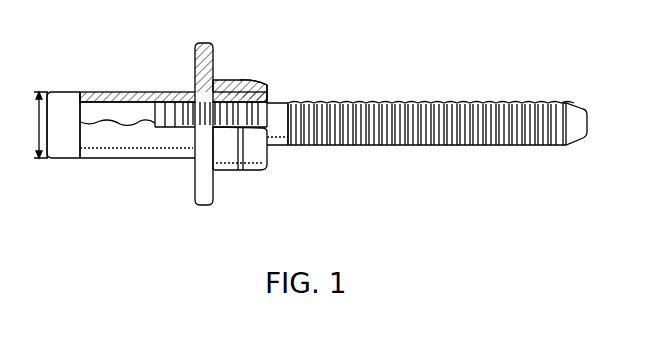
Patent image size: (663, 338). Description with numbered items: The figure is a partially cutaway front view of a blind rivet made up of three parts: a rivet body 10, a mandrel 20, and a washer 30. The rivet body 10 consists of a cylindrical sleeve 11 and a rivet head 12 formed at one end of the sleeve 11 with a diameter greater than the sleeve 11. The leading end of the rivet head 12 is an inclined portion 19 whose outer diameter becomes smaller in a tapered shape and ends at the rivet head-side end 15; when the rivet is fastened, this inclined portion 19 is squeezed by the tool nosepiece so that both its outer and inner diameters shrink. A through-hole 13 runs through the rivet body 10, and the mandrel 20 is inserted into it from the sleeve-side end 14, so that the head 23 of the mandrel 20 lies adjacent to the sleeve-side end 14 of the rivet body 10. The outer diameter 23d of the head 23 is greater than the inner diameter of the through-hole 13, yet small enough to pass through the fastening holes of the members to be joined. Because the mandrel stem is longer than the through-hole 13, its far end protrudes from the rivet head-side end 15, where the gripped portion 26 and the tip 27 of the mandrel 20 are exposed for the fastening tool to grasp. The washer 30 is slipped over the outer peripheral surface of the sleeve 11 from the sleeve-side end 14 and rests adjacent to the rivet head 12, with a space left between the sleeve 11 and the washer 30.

The rivet body 10 is at (165, 72).
The sleeve 11 is at (111, 92).
The rivet head 12 is at (229, 80).
The through-hole 13 is at (138, 103).
The sleeve-side end 14 is at (80, 92).
The rivet head-side end 15 is at (269, 92).
The inclined portion 19 is at (253, 80).
The mandrel 20 is at (402, 98).
The head 23 is at (72, 92).
The outer diameter of the head 23d is at (35, 140).
The gripped portion 26 is at (472, 103).
The tip 27 is at (575, 108).
The washer 30 is at (207, 42).